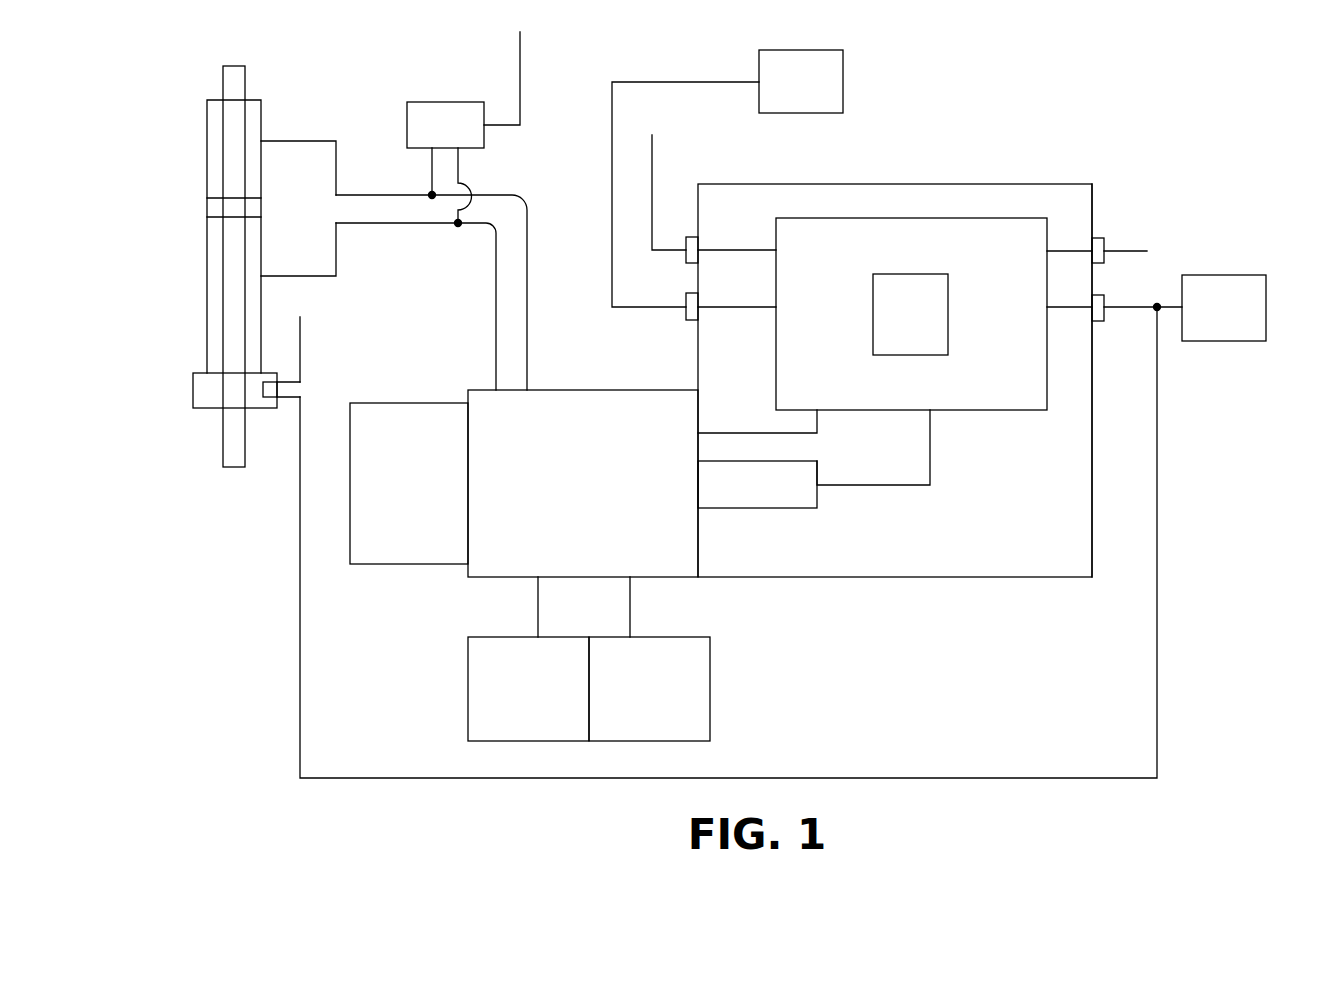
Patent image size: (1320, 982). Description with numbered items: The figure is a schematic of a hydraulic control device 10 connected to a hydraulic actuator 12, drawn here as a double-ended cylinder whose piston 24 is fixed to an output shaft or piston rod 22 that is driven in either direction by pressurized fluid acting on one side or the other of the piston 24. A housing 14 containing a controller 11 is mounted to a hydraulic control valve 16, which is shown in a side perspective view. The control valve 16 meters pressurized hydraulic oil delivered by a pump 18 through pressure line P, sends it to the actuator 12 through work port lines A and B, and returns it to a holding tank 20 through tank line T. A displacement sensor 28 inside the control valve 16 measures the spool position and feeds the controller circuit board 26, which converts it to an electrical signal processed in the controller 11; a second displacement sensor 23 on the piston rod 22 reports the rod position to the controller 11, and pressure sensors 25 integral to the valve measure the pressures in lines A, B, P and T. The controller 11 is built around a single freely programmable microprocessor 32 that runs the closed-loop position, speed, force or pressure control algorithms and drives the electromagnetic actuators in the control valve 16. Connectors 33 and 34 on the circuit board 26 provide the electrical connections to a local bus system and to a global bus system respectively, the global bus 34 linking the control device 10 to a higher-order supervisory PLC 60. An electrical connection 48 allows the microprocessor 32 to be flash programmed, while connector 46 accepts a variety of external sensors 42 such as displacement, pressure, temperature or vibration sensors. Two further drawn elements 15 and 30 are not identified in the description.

The control device 10 is at (630, 60).
The controller 11 is at (852, 178).
The hydraulic actuator 12 is at (211, 258).
The housing 14 is at (1092, 432).
The motor 15 is at (648, 388).
The hydraulic control valve 16 is at (513, 563).
The pump 18 is at (680, 697).
The return tank 20 is at (490, 697).
The output shaft 22 is at (232, 82).
The displacement sensor 23 is at (203, 388).
The piston 24 is at (240, 205).
The pressure sensors 25 is at (445, 120).
The controller circuit board 26 is at (1022, 235).
The displacement sensor 28 is at (775, 487).
The sensor 30 is at (882, 487).
The microprocessor 32 is at (920, 288).
The local bus system 33 is at (520, 50).
The global bus system 34 is at (612, 182).
The external sensors 42 is at (1233, 305).
The electrical connection 46 is at (1120, 312).
The electrical connection 48 is at (1128, 250).
The supervisory PLC 60 is at (805, 85).